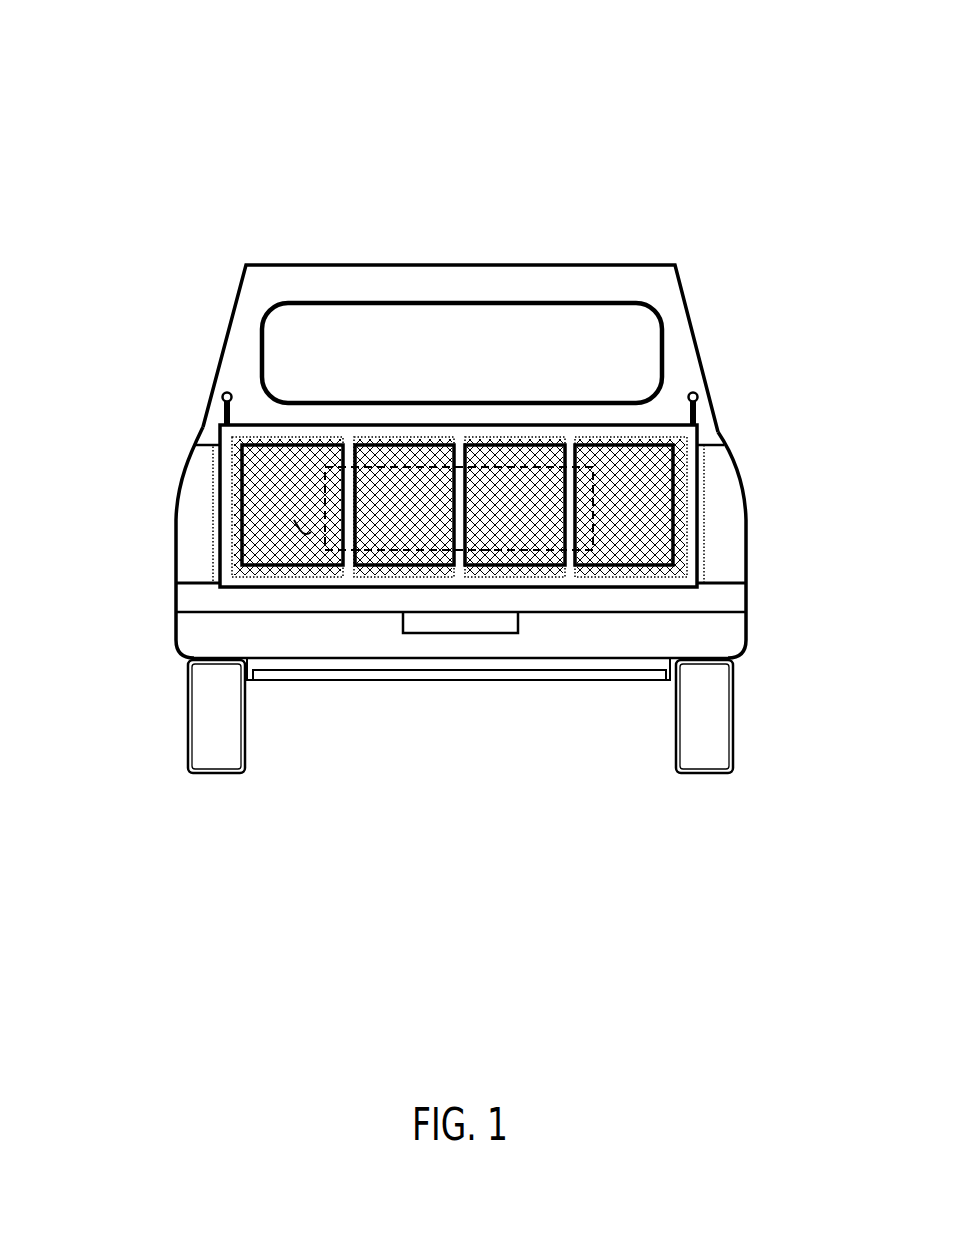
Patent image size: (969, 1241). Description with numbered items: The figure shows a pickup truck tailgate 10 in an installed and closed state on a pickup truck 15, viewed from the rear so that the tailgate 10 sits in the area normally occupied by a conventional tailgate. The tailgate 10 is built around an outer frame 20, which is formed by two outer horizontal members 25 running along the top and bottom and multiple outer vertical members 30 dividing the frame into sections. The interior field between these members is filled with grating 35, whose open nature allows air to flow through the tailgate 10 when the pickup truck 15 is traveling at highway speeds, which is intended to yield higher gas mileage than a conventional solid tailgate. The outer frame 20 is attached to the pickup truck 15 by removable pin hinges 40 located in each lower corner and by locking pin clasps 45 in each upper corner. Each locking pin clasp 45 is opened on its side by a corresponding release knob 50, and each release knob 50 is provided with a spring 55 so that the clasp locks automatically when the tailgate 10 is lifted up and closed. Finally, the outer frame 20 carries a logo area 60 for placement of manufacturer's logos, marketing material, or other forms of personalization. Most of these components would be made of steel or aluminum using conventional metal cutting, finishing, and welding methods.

The pickup truck tailgate 10 is at (116, 172).
The pickup truck 15 is at (491, 265).
The outer frame 20 is at (200, 506).
The outer horizontal members 25 is at (469, 433).
The outer vertical members 30 is at (228, 521).
The grating 35 is at (298, 528).
The removable pin hinges 40 is at (218, 568).
The locking pin clasps 45 is at (216, 462).
The release knobs 50 is at (226, 392).
The spring 55 is at (224, 412).
The logo area 60 is at (440, 548).